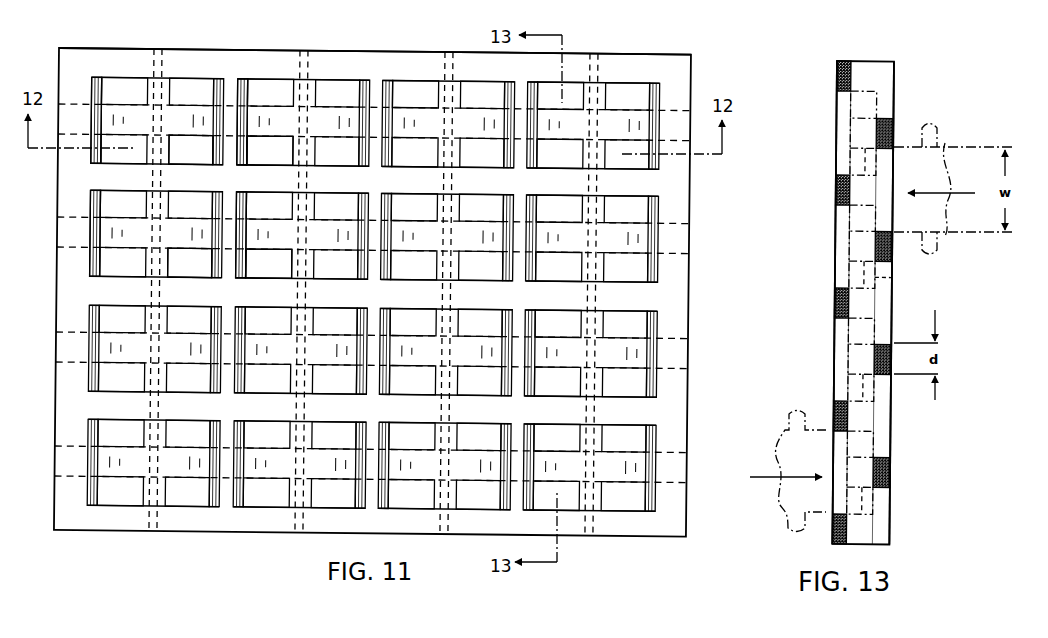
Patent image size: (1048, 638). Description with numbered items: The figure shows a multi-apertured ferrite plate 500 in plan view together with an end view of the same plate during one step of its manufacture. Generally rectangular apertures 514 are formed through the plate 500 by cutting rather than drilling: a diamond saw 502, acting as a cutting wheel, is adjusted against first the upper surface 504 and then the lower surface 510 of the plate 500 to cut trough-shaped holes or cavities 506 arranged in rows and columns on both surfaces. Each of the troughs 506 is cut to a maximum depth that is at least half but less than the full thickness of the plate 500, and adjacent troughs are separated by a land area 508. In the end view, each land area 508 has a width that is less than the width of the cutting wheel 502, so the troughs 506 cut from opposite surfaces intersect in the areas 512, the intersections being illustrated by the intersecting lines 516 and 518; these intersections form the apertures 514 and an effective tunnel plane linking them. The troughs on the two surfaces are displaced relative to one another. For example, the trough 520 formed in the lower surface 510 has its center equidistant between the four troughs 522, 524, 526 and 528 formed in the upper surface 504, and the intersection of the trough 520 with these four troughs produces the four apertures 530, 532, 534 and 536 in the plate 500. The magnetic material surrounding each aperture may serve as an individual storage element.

In FIG. 11, the plate 500 is at (694, 70).
In FIG. 13, the plate 500 is at (870, 57).
In FIG. 13, the diamond saw 502 is at (948, 146).
In FIG. 11, the upper surface 504 is at (392, 53).
In FIG. 13, the upper surface 504 is at (836, 118).
In FIG. 13, the troughs 506 is at (850, 131).
In FIG. 13, the land area 508 is at (884, 124).
In FIG. 13, the lower surface 510 is at (893, 82).
In FIG. 13, the intersecting areas 512 is at (864, 105).
In FIG. 11, the rectangular apertures 514 is at (188, 93).
In FIG. 13, the intersecting line 516 is at (851, 254).
In FIG. 13, the intersecting line 518 is at (893, 278).
In FIG. 11, the trough 520 is at (167, 182).
In FIG. 11, the trough 522 is at (100, 91).
In FIG. 11, the trough 524 is at (101, 206).
In FIG. 11, the trough 526 is at (248, 205).
In FIG. 11, the trough 528 is at (248, 93).
In FIG. 11, the aperture 530 is at (190, 143).
In FIG. 11, the aperture 532 is at (192, 208).
In FIG. 11, the aperture 534 is at (280, 148).
In FIG. 11, the aperture 536 is at (278, 210).